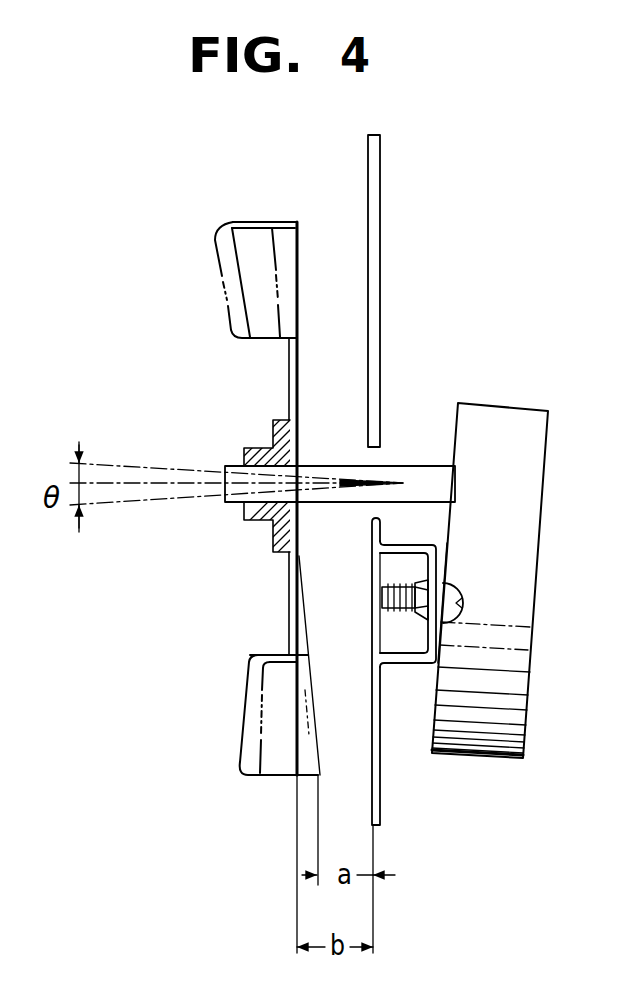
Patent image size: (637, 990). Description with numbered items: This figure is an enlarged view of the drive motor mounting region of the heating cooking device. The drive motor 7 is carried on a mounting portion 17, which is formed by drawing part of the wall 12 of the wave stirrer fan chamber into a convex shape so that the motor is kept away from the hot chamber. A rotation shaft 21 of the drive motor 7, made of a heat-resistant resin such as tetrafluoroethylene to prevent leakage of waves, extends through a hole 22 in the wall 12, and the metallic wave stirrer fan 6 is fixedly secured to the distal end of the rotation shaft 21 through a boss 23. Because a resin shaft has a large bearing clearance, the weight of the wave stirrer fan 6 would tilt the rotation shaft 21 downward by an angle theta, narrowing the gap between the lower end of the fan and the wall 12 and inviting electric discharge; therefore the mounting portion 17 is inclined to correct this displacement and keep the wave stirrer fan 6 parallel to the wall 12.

The wave stirrer fan 6 is at (242, 758).
The drive motor 7 is at (520, 532).
The wall 12 is at (382, 792).
The mounting portion 17 is at (405, 667).
The rotation shaft 21 is at (407, 466).
The hole 22 is at (372, 510).
The boss 23 is at (245, 517).